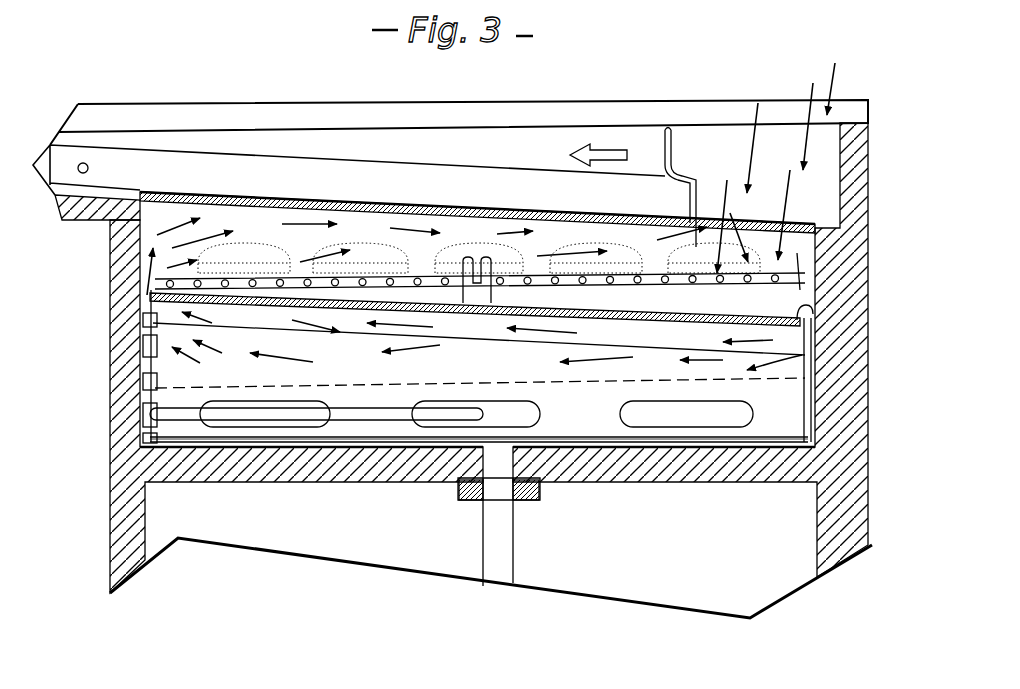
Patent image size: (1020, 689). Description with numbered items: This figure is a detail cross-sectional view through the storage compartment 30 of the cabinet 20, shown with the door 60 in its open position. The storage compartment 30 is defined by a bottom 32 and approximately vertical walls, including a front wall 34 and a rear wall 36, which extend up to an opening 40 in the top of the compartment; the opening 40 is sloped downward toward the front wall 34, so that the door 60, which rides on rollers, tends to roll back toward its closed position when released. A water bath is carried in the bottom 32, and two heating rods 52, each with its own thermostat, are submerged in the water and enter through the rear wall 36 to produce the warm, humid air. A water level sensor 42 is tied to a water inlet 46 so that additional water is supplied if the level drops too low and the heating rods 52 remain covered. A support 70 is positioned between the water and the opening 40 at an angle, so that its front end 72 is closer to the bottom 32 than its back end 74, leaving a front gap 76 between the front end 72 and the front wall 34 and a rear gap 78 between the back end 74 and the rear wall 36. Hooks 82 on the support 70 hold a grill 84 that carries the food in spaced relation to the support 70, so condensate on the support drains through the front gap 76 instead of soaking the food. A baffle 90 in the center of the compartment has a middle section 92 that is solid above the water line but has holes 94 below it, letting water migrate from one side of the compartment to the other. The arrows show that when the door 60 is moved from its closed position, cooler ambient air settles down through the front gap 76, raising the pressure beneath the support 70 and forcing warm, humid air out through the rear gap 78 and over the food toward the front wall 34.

The cabinet 20 is at (622, 90).
The storage compartment 30 is at (390, 205).
The bottom 32 is at (428, 447).
The front wall 34 is at (807, 420).
The rear wall 36 is at (108, 232).
The opening 40 is at (707, 226).
The water level sensor 42 is at (143, 383).
The water inlet 46 is at (146, 350).
The heating rods 52 is at (375, 423).
The door 60 is at (376, 178).
The support 70 is at (567, 318).
The front end 72 is at (812, 312).
The back end 74 is at (147, 284).
The front gap 76 is at (810, 348).
The rear gap 78 is at (140, 301).
The hooks 82 is at (467, 258).
The grill 84 is at (617, 285).
The baffle 90 is at (780, 412).
The middle section 92 is at (680, 452).
The holes 94 is at (622, 412).